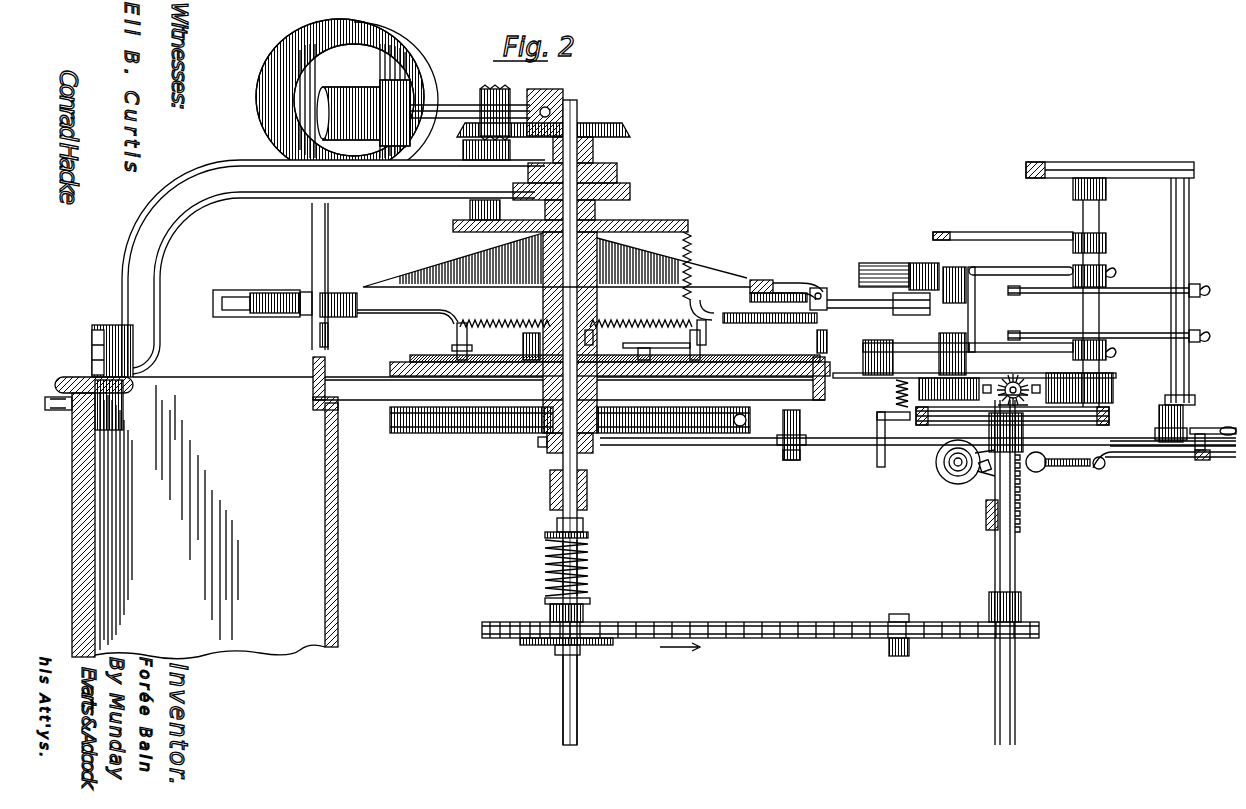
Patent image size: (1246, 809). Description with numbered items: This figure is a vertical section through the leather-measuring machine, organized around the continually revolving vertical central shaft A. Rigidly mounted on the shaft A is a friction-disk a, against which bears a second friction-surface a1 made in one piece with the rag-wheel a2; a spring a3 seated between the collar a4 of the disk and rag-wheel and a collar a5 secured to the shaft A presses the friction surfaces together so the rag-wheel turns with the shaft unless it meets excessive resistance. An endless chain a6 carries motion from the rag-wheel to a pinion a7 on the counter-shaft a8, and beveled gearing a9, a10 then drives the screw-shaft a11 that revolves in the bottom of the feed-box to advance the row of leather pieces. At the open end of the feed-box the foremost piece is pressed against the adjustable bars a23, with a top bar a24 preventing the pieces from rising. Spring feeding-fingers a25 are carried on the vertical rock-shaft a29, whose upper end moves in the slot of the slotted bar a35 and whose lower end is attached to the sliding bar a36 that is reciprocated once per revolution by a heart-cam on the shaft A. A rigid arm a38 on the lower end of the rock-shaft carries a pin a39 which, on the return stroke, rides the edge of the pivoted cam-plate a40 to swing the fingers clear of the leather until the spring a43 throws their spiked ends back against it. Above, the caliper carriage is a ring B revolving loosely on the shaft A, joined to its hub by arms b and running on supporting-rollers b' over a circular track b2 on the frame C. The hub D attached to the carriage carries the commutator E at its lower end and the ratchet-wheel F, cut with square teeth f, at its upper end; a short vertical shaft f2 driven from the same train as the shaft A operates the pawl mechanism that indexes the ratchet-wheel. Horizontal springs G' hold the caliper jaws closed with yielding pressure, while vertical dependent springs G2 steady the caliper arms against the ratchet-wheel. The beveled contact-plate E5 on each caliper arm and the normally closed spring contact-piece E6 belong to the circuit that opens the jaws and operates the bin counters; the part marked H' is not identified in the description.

The vertical central shaft A is at (557, 460).
The ring B is at (768, 280).
The frame C is at (571, 382).
The hub or hub-shaft D is at (585, 300).
The commutator E is at (593, 340).
The contact piece or plate E5 is at (702, 340).
The spring contact-piece E6 is at (468, 350).
The ratchet-wheel F is at (688, 224).
The springs G' is at (576, 306).
The vertical dependent springs G2 is at (697, 302).
The plate H' is at (661, 343).
The arms b is at (556, 271).
The supporting-rollers b' is at (573, 338).
The circular track b2 is at (330, 358).
The square teeth f is at (344, 303).
The short vertical shaft f2 is at (462, 157).
The friction-disk a is at (526, 645).
The second friction-surface a1 is at (600, 622).
The rag-wheel a2 is at (759, 626).
The spring a3 is at (588, 576).
The collar a4 is at (590, 602).
The collar a5 is at (588, 535).
The endless chain a6 is at (718, 625).
The pinion a7 is at (1039, 632).
The counter-shaft a8 is at (1016, 547).
The beveled gearing a9 is at (1040, 422).
The beveled gearing a10 is at (1024, 384).
The screw-shaft a11 is at (1005, 386).
The adjustable bars a23 is at (1028, 267).
The top bar a24 is at (1020, 228).
The spring feeding-fingers a25 is at (1060, 280).
The vertical rock-shaft a29 is at (1189, 258).
The slotted bar a35 is at (1135, 170).
The sliding bar a36 is at (1112, 441).
The rigid arm a38 is at (1153, 455).
The pin a39 is at (1096, 470).
The cam-plate a40 is at (1062, 467).
The spring a43 is at (1202, 460).